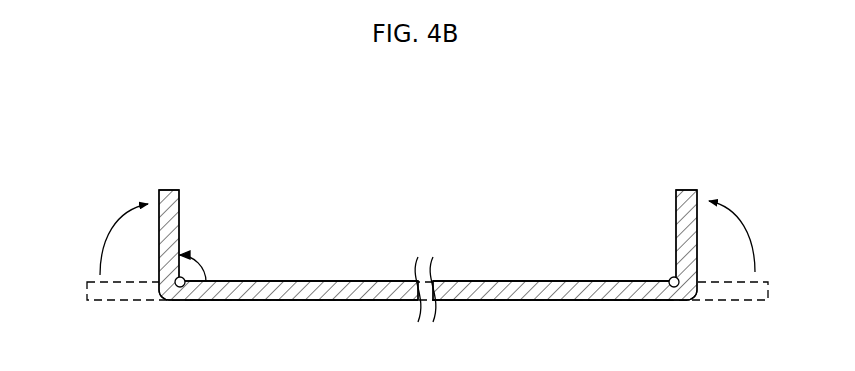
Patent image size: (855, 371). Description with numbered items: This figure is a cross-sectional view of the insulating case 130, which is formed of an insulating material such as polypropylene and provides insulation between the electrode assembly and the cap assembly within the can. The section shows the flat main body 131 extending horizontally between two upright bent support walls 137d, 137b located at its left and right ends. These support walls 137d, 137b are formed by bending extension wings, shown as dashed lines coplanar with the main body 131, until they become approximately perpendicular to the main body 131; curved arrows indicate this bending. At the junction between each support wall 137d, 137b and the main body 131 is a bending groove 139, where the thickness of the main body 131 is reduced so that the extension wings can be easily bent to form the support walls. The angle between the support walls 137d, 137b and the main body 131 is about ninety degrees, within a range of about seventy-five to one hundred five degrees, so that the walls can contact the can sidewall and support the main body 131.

The insulating case 130 is at (110, 158).
The main body 131 is at (525, 300).
The bent support wall 137b is at (680, 189).
The bent support wall 137d is at (167, 192).
The bending groove 139 is at (188, 300).